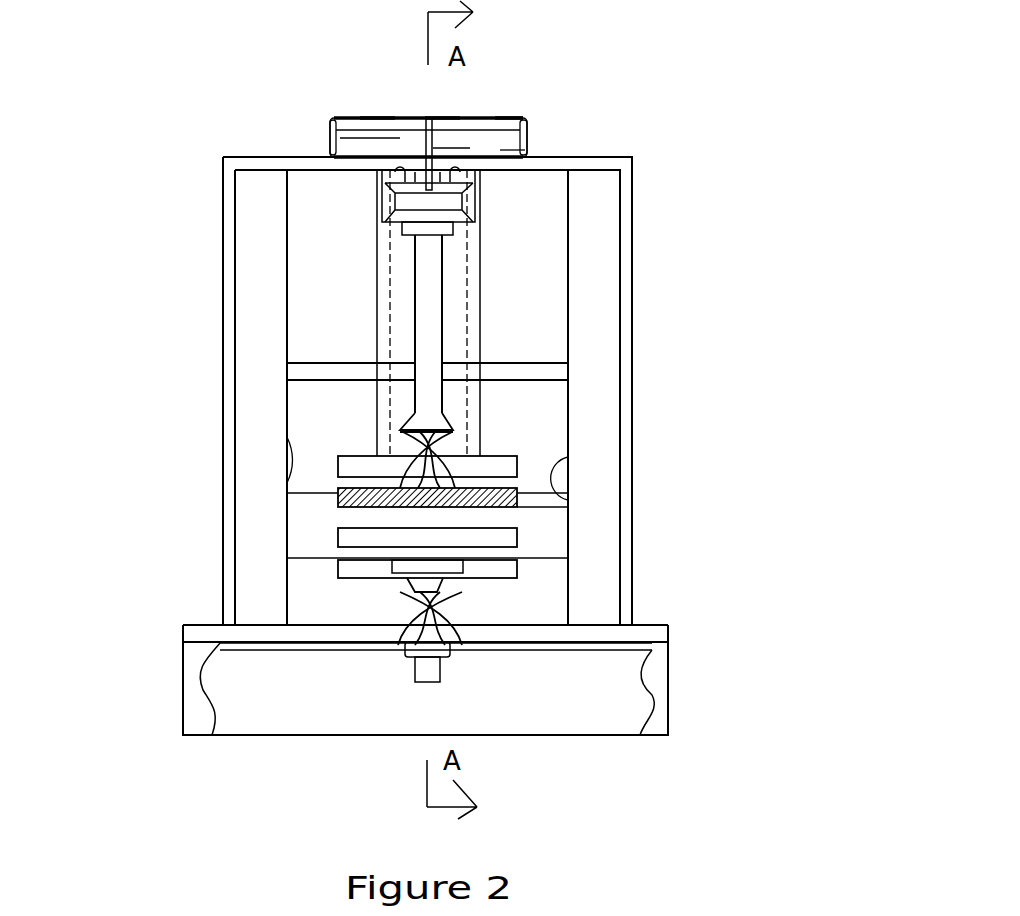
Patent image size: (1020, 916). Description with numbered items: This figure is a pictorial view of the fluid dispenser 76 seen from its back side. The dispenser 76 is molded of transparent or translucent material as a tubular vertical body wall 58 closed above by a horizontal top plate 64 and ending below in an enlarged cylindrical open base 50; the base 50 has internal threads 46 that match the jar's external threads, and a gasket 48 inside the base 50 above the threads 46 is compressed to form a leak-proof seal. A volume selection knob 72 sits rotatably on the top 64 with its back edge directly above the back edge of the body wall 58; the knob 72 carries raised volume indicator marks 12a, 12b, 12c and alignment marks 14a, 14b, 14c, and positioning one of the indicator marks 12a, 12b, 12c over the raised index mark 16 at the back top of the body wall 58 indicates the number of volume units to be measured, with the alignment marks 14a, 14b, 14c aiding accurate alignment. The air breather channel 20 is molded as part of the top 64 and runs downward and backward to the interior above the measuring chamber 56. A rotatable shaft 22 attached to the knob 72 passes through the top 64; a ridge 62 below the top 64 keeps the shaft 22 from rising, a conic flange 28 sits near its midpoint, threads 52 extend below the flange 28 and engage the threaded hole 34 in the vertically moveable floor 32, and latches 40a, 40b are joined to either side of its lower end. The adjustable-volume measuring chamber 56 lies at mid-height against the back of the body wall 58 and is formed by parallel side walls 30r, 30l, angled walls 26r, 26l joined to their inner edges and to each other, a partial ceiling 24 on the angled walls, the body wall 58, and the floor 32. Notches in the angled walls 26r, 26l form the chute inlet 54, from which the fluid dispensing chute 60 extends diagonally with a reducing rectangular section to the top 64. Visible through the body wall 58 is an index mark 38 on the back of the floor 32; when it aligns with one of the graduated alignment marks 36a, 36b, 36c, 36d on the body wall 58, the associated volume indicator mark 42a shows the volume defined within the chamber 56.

The volume indicator mark 12a is at (377, 118).
The volume indicator mark 12b is at (680, 73).
The volume indicator mark 12c is at (680, 73).
The alignment mark 14a is at (360, 140).
The alignment mark 14b is at (672, 122).
The alignment mark 14c is at (672, 122).
The index mark 16 is at (433, 182).
The air breather channel 20 is at (450, 205).
The rotatable shaft 22 is at (442, 293).
The partial ceiling 24 is at (517, 373).
The angled wall 26r is at (523, 403).
The angled wall 26l is at (705, 408).
The flange 28 is at (462, 423).
The side wall 30l is at (287, 492).
The side wall 30r is at (547, 500).
The floor 32 is at (547, 515).
The threaded hole 34 is at (480, 508).
The graduated alignment mark 36a is at (517, 465).
The graduated alignment mark 36b is at (708, 622).
The graduated alignment mark 36c is at (708, 622).
The graduated alignment mark 36d is at (708, 622).
The index mark 38 is at (517, 478).
The latch 40a is at (413, 655).
The latch 40b is at (440, 663).
The volume indicator mark 42a is at (315, 632).
The internal threads 46 is at (215, 712).
The gasket 48 is at (225, 642).
The cylindrical open base 50 is at (207, 625).
The threads 52 is at (398, 442).
The chute inlet 54 is at (397, 407).
The adjustable-volume measuring chamber 56 is at (233, 383).
The body wall 58 is at (223, 277).
The fluid dispensing chute 60 is at (377, 258).
The ridge 62 is at (402, 228).
The top plate 64 is at (263, 157).
The volume selection knob 72 is at (332, 118).
The fluid dispenser 76 is at (303, 103).